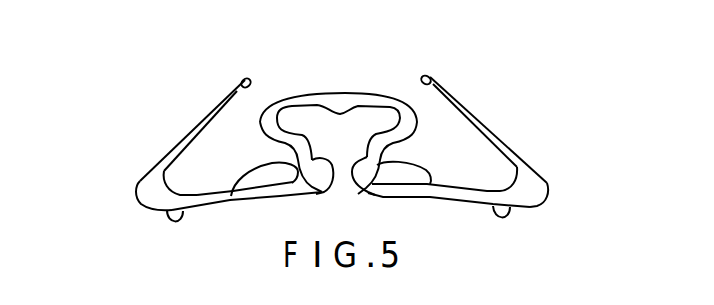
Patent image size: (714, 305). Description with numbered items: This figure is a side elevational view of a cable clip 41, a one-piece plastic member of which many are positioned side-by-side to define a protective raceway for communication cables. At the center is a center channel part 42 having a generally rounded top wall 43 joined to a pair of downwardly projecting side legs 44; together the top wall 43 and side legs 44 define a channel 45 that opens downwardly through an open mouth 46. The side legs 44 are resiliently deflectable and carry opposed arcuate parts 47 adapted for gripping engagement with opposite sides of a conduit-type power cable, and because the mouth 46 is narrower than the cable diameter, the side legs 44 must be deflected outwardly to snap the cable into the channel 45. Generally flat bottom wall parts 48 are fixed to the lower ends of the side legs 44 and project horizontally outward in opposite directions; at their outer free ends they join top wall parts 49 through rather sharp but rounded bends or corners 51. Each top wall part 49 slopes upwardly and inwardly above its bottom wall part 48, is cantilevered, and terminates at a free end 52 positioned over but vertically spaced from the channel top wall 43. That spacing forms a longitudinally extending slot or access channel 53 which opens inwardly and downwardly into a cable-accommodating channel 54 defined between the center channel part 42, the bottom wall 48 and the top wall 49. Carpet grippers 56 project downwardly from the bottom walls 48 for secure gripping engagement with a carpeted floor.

The cable clip 41 is at (496, 84).
The center channel part 42 is at (313, 86).
The top wall 43 is at (361, 103).
The side legs 44 is at (231, 196).
The channel 45 is at (336, 134).
The open mouth 46 is at (342, 178).
The arcuate parts 47 is at (333, 172).
The bottom wall parts 48 is at (207, 205).
The top wall parts 49 is at (203, 107).
The bends or corners 51 is at (147, 192).
The free end 52 is at (243, 79).
The slot or access channel 53 is at (262, 98).
The cable-accommodating channel 54 is at (198, 147).
The carpet grippers 56 is at (168, 213).